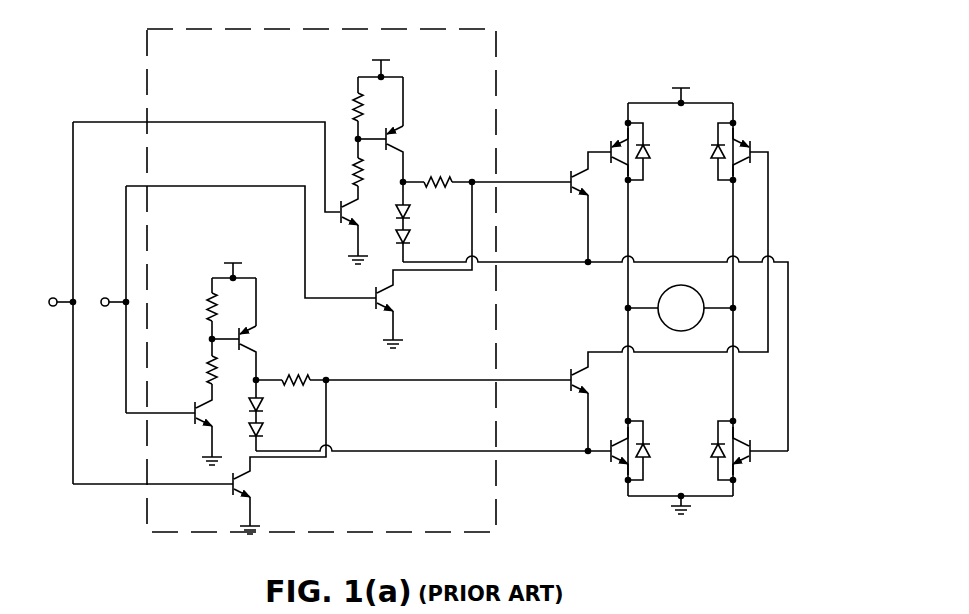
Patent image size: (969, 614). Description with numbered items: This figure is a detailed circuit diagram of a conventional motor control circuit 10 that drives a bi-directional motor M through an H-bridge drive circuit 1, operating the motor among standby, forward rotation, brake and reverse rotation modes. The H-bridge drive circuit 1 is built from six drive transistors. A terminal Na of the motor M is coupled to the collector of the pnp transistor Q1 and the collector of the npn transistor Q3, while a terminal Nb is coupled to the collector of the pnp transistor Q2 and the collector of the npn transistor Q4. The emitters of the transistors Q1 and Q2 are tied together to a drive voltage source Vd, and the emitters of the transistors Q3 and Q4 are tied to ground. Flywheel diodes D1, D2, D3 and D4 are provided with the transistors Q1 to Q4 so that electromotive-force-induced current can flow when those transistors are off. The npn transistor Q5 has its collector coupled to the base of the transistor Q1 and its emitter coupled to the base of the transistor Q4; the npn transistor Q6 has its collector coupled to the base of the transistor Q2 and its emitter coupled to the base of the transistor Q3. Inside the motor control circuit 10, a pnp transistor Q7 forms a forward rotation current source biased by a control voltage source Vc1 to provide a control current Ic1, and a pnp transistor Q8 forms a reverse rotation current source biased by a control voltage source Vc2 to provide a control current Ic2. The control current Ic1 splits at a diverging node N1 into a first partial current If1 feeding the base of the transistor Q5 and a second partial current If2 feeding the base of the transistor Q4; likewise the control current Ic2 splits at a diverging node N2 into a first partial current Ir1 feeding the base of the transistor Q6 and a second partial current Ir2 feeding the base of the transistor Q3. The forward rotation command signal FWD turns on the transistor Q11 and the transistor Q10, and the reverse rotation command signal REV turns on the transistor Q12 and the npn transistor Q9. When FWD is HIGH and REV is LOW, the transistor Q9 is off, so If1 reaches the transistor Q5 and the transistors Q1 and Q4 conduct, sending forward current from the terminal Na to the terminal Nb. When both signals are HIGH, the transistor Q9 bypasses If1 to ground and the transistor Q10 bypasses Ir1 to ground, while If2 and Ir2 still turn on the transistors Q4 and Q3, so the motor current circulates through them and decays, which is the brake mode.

The H-bridge drive circuit 1 is at (781, 80).
The motor control circuit 10 is at (496, 56).
The pnp transistor Q1 is at (609, 146).
The pnp transistor Q2 is at (753, 146).
The npn transistor Q3 is at (608, 466).
The npn transistor Q4 is at (753, 466).
The npn transistor Q5 is at (568, 177).
The npn transistor Q6 is at (568, 374).
The pnp transistor Q7 is at (405, 137).
The pnp transistor Q8 is at (258, 337).
The npn transistor Q9 is at (395, 300).
The transistor Q10 is at (252, 488).
The transistor Q11 is at (345, 226).
The transistor Q12 is at (204, 428).
The flywheel diode D1 is at (656, 160).
The flywheel diode D2 is at (715, 157).
The flywheel diode D3 is at (653, 460).
The flywheel diode D4 is at (713, 461).
The bi-directional motor M is at (680, 308).
The diverging node N1 is at (408, 180).
The diverging node N2 is at (260, 378).
The terminal Na is at (624, 306).
The terminal Nb is at (750, 296).
The control voltage source Vc1 is at (382, 60).
The control voltage source Vc2 is at (234, 262).
The drive voltage source Vd is at (681, 85).
The control current Ic1 is at (413, 82).
The control current Ic2 is at (262, 283).
The first partial current If1 is at (513, 179).
The second partial current If2 is at (513, 259).
The first partial current Ir1 is at (513, 377).
The second partial current Ir2 is at (513, 448).
The forward rotation command signal FWD is at (48, 292).
The reverse rotation command signal REV is at (104, 292).